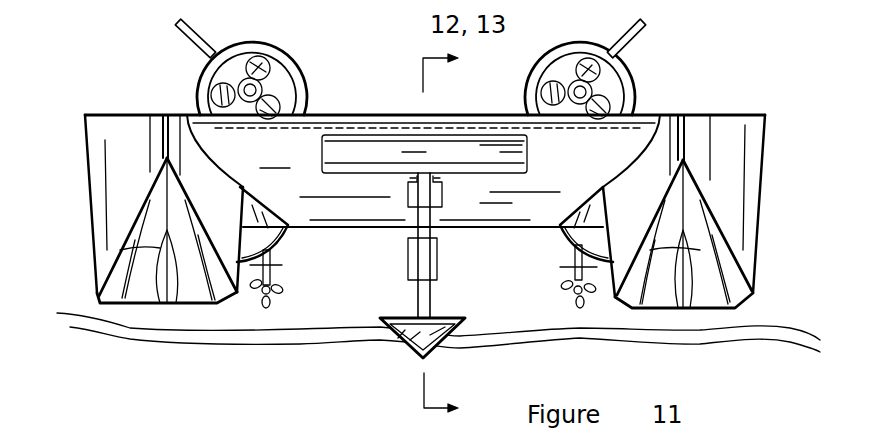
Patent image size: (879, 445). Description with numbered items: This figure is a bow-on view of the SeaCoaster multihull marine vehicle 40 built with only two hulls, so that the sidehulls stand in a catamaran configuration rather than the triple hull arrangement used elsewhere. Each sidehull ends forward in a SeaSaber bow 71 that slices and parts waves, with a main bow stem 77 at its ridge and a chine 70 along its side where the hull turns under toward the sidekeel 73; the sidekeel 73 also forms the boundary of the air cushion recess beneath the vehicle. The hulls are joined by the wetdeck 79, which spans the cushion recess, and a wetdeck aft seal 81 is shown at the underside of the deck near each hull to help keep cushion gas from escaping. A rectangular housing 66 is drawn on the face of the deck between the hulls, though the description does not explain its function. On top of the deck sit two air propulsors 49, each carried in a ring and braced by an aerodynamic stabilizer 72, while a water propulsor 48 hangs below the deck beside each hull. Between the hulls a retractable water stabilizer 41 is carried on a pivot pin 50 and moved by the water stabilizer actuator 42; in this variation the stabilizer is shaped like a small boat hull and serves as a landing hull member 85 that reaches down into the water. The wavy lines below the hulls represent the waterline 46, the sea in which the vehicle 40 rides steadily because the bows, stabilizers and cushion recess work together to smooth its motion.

The multihull marine vehicle 40 is at (737, 130).
The water stabilizer 41 is at (413, 295).
The water stabilizer actuator 42 is at (437, 258).
The waterline 46 is at (757, 343).
The water propulsor 48 is at (282, 288).
The air propulsor 49 is at (265, 90).
The pivot pin 50 is at (442, 195).
The housing box 66 is at (527, 145).
The chine 70 is at (150, 197).
The SeaSaber bow 71 is at (152, 243).
The aerodynamic stabilizer 72 is at (187, 38).
The sidekeel 73 is at (100, 320).
The main bow stem 77 is at (163, 160).
The wetdeck 79 is at (268, 160).
The wetdeck aft seal 81 is at (602, 190).
The landing hull member 85 is at (410, 342).